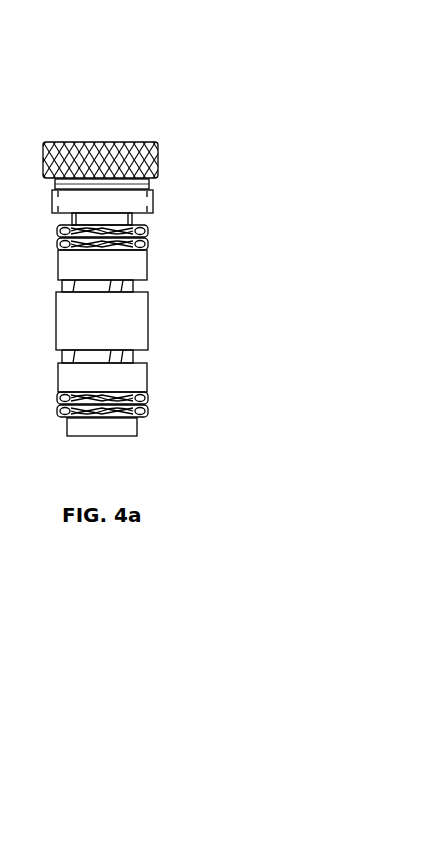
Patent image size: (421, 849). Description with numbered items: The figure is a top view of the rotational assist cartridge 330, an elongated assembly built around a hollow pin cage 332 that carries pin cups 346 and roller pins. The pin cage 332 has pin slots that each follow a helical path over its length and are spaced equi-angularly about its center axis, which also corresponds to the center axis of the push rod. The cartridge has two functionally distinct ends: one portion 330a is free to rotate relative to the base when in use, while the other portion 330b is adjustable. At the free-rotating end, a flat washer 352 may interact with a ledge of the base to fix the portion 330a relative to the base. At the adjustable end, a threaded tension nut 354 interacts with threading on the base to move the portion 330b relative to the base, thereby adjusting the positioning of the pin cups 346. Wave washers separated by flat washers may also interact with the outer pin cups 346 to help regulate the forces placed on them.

The rotational assist cartridge 330 is at (140, 55).
The threaded tension nut 354 is at (157, 132).
The adjustable portion of the rotational assist cartridge 330b is at (175, 182).
The pin cups 346 is at (150, 313).
The hollow pin cage 332 is at (143, 355).
The flat washer 352 is at (145, 418).
The free-rotating portion of the rotational assist cartridge 330a is at (150, 432).